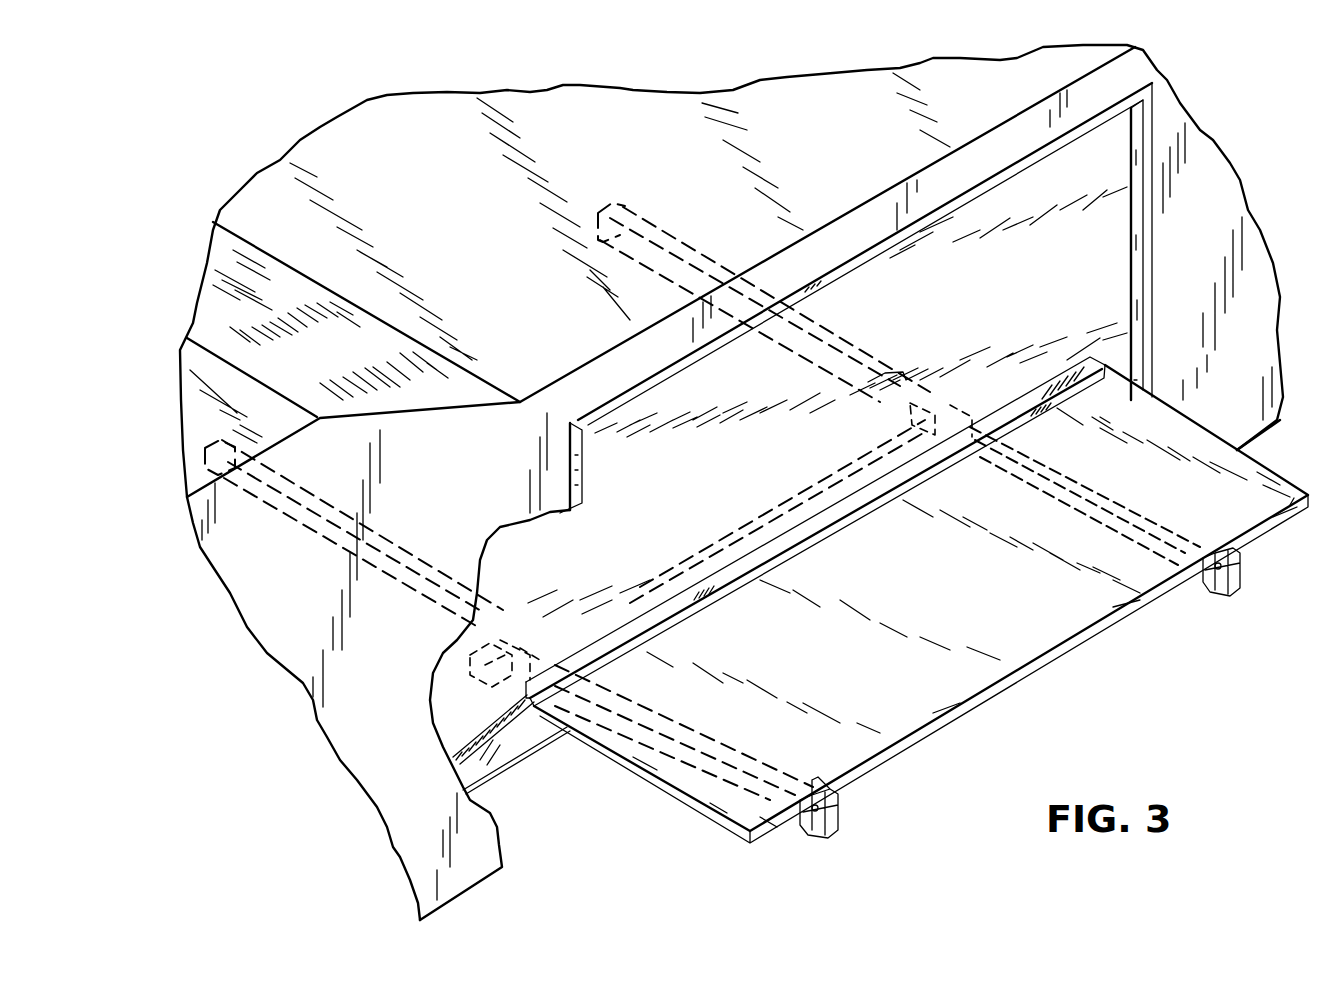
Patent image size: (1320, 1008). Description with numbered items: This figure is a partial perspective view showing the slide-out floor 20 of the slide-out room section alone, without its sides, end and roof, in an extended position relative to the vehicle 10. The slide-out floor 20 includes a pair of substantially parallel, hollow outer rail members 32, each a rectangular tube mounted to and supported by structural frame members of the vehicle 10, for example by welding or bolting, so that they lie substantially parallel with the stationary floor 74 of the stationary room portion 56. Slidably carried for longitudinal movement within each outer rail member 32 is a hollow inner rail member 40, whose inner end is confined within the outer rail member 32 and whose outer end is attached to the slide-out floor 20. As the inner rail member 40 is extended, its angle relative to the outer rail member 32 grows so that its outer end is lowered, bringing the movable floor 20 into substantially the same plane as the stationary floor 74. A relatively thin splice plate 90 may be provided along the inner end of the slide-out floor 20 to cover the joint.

The vehicle 10 is at (397, 183).
The slide-out floor 20 is at (983, 600).
The outer rail members 32 is at (853, 354).
The inner rail member 40 is at (1207, 589).
The stationary room portion 56 is at (1096, 268).
The stationary floor 74 is at (692, 496).
The splice plate 90 is at (1084, 368).